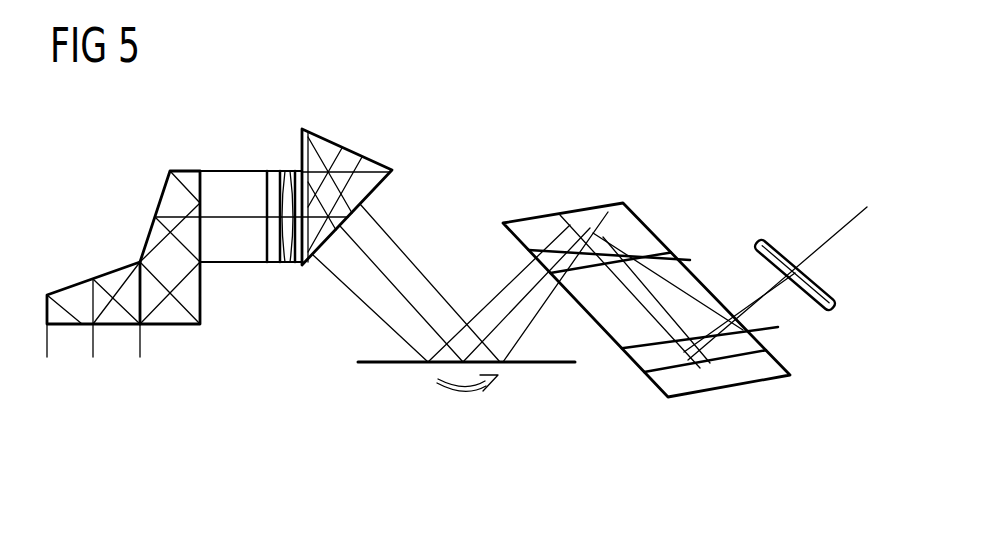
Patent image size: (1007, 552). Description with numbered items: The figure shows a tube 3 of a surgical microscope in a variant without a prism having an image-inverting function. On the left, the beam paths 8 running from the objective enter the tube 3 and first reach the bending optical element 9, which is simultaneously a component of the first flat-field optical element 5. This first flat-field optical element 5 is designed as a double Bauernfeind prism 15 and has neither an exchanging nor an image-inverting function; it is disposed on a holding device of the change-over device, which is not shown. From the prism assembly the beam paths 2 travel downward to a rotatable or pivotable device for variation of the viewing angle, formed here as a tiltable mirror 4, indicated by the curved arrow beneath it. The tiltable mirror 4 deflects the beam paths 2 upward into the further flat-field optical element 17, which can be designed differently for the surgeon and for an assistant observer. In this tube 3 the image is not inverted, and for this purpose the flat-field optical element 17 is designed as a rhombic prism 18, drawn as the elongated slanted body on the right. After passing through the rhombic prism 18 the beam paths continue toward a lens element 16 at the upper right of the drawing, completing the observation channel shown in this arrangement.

The beam paths 2 is at (402, 296).
The tube 3 is at (455, 95).
The tiltable mirror 4 is at (536, 367).
The first flat-field optical element 5 is at (112, 276).
The beam paths 8 is at (140, 357).
The bending optical element 9 is at (75, 293).
The double Bauernfeind prism 15 is at (192, 293).
The lens 16 is at (757, 243).
The flat-field optical element 17 is at (646, 327).
The rhombic prism 18 is at (703, 382).